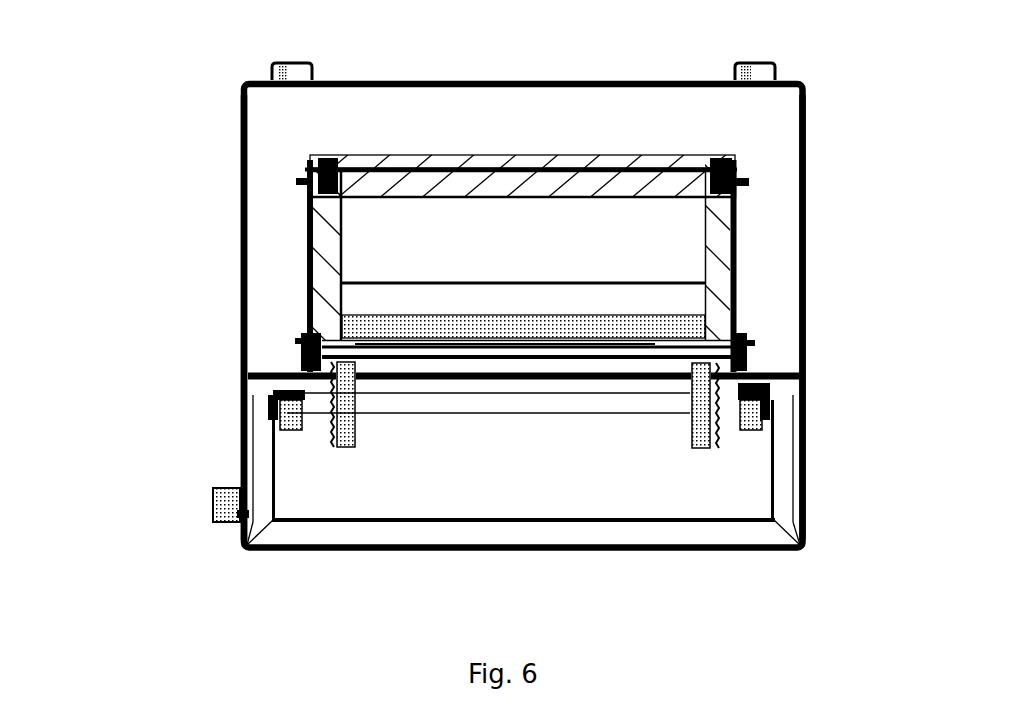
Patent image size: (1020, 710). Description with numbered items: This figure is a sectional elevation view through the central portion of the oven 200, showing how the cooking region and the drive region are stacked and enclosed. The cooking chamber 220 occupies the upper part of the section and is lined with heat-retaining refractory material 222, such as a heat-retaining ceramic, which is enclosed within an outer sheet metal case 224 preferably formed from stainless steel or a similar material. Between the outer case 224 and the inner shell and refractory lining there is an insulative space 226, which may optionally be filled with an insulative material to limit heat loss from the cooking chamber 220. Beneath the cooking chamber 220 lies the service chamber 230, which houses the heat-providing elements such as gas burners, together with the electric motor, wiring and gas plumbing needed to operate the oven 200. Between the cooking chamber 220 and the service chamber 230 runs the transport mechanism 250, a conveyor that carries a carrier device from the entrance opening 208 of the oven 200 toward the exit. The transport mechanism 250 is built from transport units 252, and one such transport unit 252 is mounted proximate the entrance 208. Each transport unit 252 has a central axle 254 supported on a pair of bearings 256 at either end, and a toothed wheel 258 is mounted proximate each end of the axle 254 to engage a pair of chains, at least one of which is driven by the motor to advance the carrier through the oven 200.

The oven 200 is at (277, 124).
The entrance opening 208 is at (525, 290).
The cooking chamber 220 is at (380, 233).
The heat-retaining refractory material 222 is at (617, 178).
The outer sheet metal case 224 is at (245, 155).
The insulative space 226 is at (767, 264).
The service chamber 230 is at (440, 477).
The transport mechanism 250 is at (570, 405).
The transport unit 252 is at (475, 405).
The central axle 254 is at (615, 413).
The bearing 256 is at (275, 415).
The toothed wheel 258 is at (722, 440).